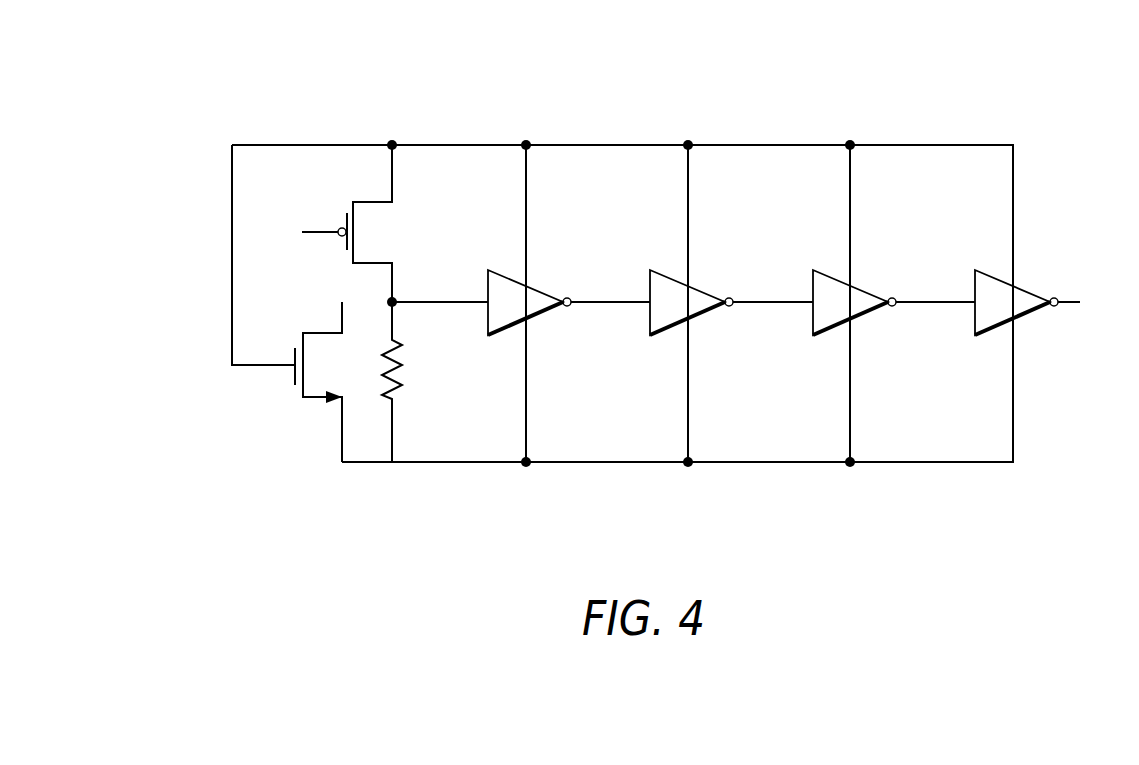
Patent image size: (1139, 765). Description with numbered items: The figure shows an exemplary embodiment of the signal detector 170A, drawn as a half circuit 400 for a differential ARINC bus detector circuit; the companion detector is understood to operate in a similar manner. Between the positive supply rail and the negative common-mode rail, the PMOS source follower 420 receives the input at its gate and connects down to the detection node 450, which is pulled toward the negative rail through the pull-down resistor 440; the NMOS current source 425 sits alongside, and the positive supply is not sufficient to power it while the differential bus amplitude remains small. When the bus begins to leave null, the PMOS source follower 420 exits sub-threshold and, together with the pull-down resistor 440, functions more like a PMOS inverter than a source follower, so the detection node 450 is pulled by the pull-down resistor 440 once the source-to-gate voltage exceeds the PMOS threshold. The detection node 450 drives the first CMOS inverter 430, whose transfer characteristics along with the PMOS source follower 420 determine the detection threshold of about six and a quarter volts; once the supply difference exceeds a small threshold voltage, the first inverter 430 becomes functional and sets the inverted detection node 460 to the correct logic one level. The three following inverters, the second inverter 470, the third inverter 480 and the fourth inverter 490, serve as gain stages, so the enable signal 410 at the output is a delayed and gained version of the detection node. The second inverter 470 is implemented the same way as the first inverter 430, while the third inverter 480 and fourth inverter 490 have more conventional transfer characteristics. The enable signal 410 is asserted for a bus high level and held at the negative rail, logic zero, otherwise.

The signal detector 170A is at (104, 182).
The half circuit 400 is at (916, 126).
The enable signal ENA 410 is at (1065, 298).
The PMOS source follower MP_D 420 is at (405, 207).
The current source MN_D 425 is at (286, 377).
The CMOS inverter B1 430 is at (537, 288).
The resistor Rpd 440 is at (396, 385).
The ADET 450 is at (392, 302).
The ADETB 460 is at (610, 303).
The inverter B2 470 is at (702, 290).
The inverter B3 480 is at (865, 290).
The inverter B4 490 is at (980, 335).